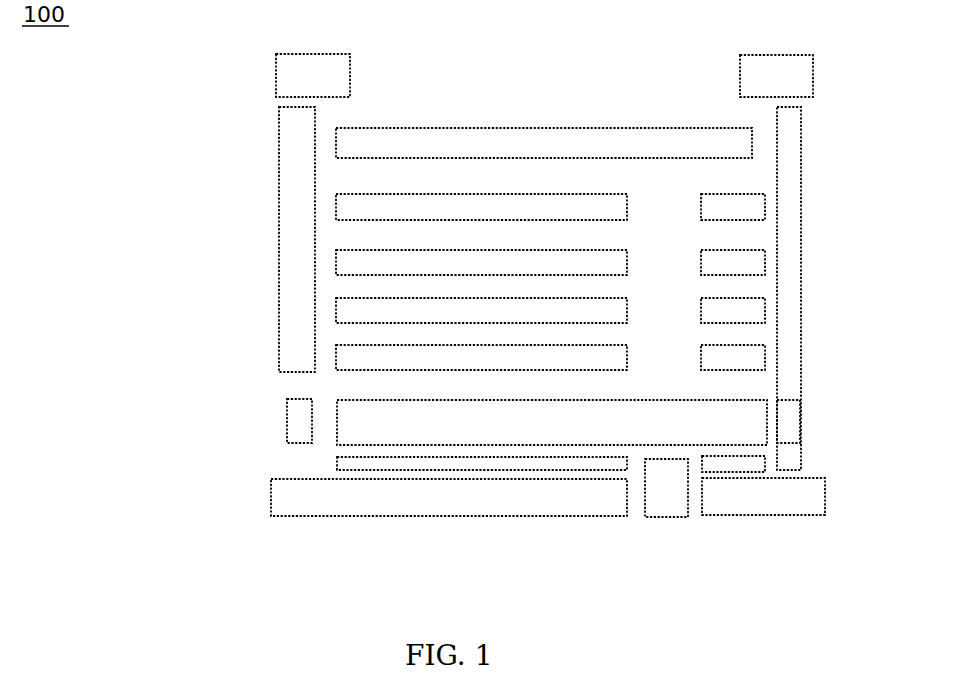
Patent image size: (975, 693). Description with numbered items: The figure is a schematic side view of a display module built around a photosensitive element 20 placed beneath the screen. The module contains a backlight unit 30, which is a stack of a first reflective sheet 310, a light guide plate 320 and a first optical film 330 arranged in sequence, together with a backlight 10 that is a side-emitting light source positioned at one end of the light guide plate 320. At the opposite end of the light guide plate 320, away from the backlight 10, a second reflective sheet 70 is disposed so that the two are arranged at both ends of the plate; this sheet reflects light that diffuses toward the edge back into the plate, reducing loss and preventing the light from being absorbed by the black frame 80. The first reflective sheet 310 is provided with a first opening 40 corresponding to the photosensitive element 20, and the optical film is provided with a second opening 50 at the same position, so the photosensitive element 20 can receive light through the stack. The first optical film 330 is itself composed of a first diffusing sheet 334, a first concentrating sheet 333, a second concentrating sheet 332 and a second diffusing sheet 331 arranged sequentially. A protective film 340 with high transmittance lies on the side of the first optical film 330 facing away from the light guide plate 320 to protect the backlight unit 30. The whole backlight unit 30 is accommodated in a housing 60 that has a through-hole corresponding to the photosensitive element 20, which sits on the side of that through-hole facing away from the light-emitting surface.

The black frame 80 is at (337, 68).
The protective film 340 is at (362, 152).
The first optical film 330 is at (372, 270).
The second diffusing sheet 331 is at (362, 201).
The second concentrating sheet 332 is at (362, 258).
The first concentrating sheet 333 is at (362, 318).
The first diffusing sheet 334 is at (362, 358).
The backlight unit 30 is at (147, 236).
The second opening 50 is at (682, 238).
The light guide plate 320 is at (342, 406).
The backlight 10 is at (300, 421).
The first reflective sheet 310 is at (340, 468).
The second reflective sheet 70 is at (785, 422).
The housing 60 is at (785, 504).
The first opening 40 is at (633, 515).
The photosensitive element 20 is at (675, 510).